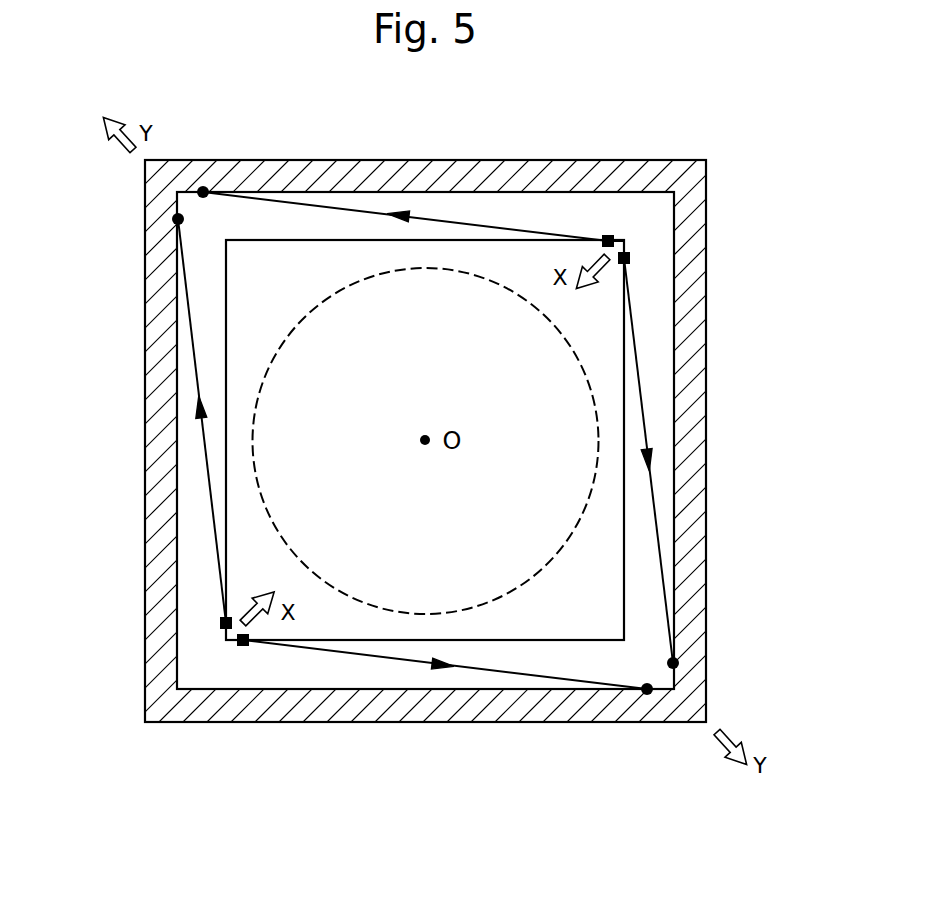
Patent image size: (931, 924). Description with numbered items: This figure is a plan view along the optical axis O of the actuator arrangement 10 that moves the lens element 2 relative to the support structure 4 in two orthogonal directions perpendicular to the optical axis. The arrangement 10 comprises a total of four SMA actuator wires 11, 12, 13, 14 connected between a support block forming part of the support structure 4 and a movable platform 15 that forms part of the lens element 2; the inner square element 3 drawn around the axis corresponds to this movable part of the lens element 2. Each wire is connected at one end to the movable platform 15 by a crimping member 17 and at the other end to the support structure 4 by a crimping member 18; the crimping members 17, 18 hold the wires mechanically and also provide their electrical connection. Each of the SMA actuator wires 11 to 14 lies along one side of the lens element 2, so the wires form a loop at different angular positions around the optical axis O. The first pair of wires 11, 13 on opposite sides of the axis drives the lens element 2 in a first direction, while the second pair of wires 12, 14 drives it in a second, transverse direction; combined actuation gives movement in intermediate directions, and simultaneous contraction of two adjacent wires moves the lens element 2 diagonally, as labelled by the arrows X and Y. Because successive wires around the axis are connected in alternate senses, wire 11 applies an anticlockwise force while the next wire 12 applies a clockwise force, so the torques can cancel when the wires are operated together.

The lens element 2 is at (598, 428).
The stage 3 is at (532, 258).
The support structure 4 is at (688, 302).
The actuator arrangement 10 is at (110, 412).
The SMA actuator wire 11 is at (486, 223).
The SMA actuator wire 12 is at (655, 503).
The SMA actuator wire 13 is at (495, 672).
The SMA actuator wire 14 is at (210, 490).
The movable platform 15 is at (608, 372).
The crimping member 17 is at (608, 241).
The crimping member 18 is at (203, 192).